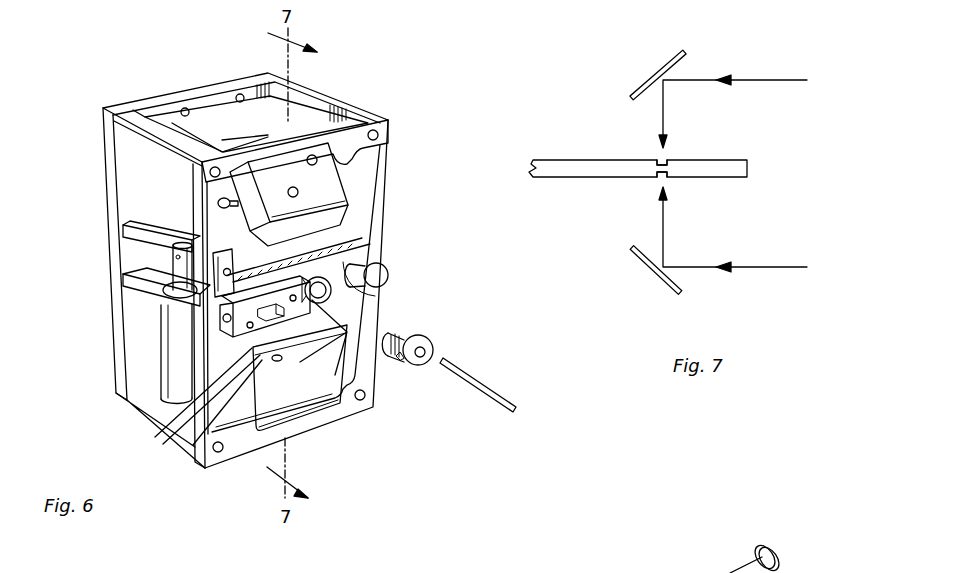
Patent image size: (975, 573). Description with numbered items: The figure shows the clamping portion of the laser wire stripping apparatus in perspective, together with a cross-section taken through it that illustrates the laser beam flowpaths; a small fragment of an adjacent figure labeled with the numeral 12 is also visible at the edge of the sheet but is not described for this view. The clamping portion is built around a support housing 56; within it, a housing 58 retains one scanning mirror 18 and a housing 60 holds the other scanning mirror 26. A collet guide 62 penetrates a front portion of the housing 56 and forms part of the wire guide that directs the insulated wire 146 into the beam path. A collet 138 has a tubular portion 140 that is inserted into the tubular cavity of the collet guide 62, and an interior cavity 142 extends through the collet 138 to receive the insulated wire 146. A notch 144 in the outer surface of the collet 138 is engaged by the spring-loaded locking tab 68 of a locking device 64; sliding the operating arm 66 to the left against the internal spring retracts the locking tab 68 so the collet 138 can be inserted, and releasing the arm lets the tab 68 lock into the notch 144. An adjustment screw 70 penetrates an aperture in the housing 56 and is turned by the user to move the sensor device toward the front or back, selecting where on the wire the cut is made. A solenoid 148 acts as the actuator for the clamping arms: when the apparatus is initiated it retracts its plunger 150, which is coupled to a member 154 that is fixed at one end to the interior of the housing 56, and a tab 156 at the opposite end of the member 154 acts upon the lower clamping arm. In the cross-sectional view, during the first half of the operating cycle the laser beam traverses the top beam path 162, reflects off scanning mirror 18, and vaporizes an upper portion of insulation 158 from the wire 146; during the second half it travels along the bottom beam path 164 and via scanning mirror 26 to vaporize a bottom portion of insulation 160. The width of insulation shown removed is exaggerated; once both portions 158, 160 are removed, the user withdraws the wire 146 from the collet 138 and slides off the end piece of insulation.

In FIG. 6, the clamping portion housing 56 is at (388, 118).
In FIG. 6, the housing 58 is at (330, 187).
In FIG. 6, the housing 60 is at (307, 318).
In FIG. 6, the collet guide 62 is at (332, 302).
In FIG. 6, the locking device 64 is at (160, 436).
In FIG. 6, the operating arm 66 is at (193, 445).
In FIG. 6, the locking tab 68 is at (300, 322).
In FIG. 6, the adjustment screw 70 is at (380, 264).
In FIG. 6, the collet 138 is at (440, 328).
In FIG. 6, the tubular portion 140 is at (397, 332).
In FIG. 6, the interior cavity 142 is at (423, 355).
In FIG. 6, the notch 144 is at (402, 366).
In FIG. 6, the insulated wire 146 is at (468, 377).
In FIG. 7, the insulated wire 146 is at (612, 178).
In FIG. 6, the solenoid 148 is at (160, 374).
In FIG. 6, the plunger 150 is at (172, 272).
In FIG. 6, the member 154 is at (127, 238).
In FIG. 6, the tab 156 is at (210, 248).
In FIG. 7, the scanning mirror 18 is at (648, 80).
In FIG. 7, the scanning mirror 26 is at (658, 283).
In FIG. 7, the upper portion of insulation 158 is at (663, 153).
In FIG. 7, the bottom portion of insulation 160 is at (660, 183).
In FIG. 7, the top beam path 162 is at (775, 78).
In FIG. 7, the bottom beam path 164 is at (767, 267).
In FIG. 7, the lens 12 is at (773, 548).